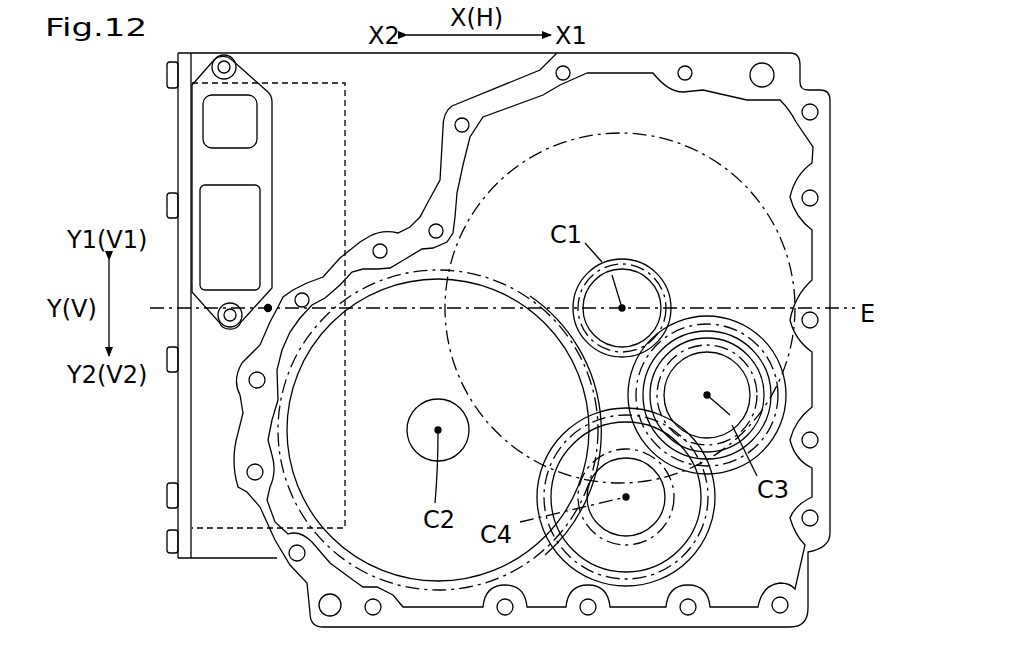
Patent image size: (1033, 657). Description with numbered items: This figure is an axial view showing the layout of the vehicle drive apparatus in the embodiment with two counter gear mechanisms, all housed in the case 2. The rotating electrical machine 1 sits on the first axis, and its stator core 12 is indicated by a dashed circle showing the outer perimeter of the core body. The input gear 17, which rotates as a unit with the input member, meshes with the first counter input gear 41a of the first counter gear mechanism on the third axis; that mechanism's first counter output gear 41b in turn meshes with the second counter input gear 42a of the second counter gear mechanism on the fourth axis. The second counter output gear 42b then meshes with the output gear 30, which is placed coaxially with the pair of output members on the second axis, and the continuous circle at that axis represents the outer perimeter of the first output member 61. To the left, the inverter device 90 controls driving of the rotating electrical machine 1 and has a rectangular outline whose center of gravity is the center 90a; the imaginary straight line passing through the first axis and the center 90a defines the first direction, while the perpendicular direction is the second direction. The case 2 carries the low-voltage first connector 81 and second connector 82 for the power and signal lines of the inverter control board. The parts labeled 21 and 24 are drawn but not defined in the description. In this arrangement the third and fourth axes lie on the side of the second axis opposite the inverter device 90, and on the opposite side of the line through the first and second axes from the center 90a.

The rotating electrical machine 1 is at (735, 170).
The case 2 is at (840, 401).
The stator core 12 is at (760, 190).
The input gear 17 is at (645, 256).
The peripheral wall 21 is at (830, 253).
The bracket / terminal block 24 is at (177, 147).
The output gear 30 is at (337, 556).
The first counter input gear 41a is at (790, 408).
The first counter output gear 41b is at (707, 345).
The second counter input gear 42a is at (713, 512).
The second counter output gear 42b is at (668, 514).
The first output member 61 is at (413, 400).
The first connector 81 is at (243, 133).
The second connector 82 is at (243, 205).
The inverter device 90 is at (353, 147).
The center of the inverter device 90a is at (268, 305).